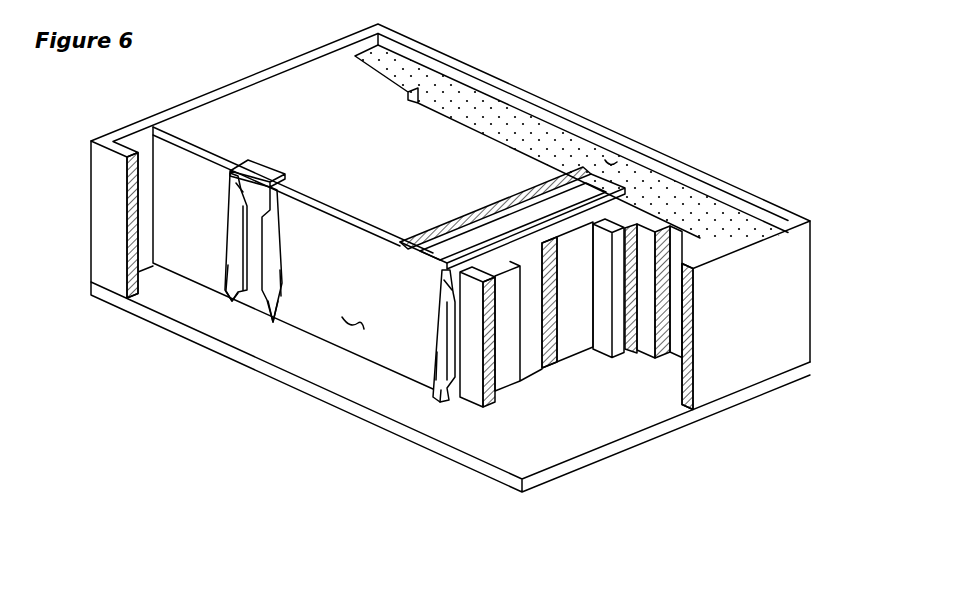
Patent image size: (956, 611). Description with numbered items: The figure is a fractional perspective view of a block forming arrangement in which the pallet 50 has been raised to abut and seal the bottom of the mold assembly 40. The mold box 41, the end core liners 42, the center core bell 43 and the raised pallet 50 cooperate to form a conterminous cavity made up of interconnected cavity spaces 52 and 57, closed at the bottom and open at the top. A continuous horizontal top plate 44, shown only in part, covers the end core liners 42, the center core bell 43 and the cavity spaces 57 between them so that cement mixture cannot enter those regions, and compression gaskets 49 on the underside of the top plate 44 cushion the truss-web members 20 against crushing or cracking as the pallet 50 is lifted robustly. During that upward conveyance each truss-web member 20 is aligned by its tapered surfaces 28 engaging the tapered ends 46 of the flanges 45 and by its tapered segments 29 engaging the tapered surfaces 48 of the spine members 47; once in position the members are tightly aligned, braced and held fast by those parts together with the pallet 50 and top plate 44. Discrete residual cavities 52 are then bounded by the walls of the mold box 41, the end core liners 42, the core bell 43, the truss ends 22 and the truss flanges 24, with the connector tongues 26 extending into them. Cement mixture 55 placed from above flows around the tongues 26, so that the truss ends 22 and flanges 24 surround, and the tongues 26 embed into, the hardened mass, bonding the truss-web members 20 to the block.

The truss-web member 20 is at (570, 330).
The truss end 22 is at (258, 294).
The truss flange 24 is at (243, 190).
The connector tongue 26 is at (238, 242).
The tapered surface 28 is at (230, 296).
The tapered segment 29 is at (491, 392).
The mold assembly 40 is at (665, 90).
The mold box 41 is at (571, 123).
The end core liner 42 is at (172, 166).
The center core bell 43 is at (342, 245).
The top plate 44 is at (272, 97).
The flange 45 is at (447, 263).
The tapered end 46 is at (226, 262).
The spine member 47 is at (497, 273).
The tapered surface 48 is at (498, 378).
The compression gasket 49 is at (258, 172).
The pallet 50 is at (290, 355).
The residual cavity 52 is at (617, 163).
The cement mixture 55 is at (525, 123).
The cavity space 57 is at (533, 227).